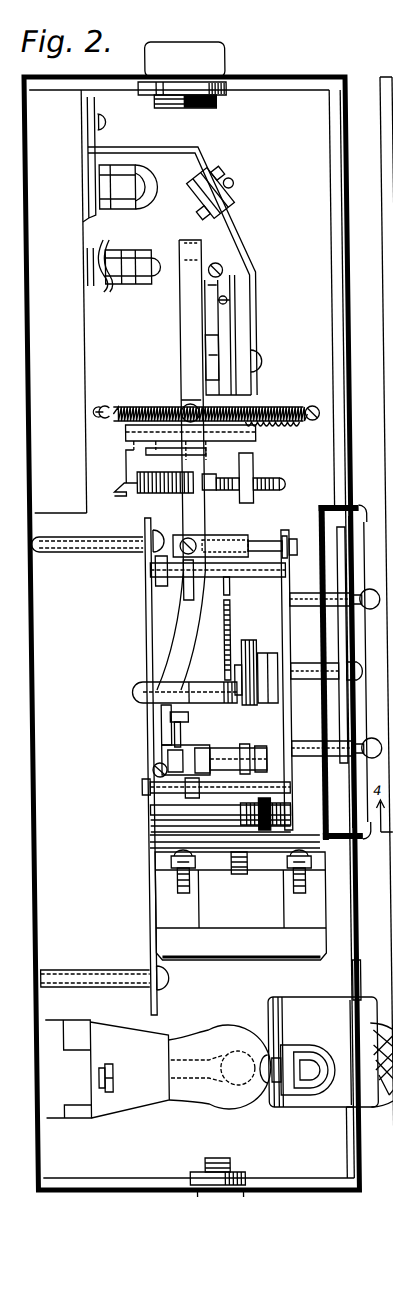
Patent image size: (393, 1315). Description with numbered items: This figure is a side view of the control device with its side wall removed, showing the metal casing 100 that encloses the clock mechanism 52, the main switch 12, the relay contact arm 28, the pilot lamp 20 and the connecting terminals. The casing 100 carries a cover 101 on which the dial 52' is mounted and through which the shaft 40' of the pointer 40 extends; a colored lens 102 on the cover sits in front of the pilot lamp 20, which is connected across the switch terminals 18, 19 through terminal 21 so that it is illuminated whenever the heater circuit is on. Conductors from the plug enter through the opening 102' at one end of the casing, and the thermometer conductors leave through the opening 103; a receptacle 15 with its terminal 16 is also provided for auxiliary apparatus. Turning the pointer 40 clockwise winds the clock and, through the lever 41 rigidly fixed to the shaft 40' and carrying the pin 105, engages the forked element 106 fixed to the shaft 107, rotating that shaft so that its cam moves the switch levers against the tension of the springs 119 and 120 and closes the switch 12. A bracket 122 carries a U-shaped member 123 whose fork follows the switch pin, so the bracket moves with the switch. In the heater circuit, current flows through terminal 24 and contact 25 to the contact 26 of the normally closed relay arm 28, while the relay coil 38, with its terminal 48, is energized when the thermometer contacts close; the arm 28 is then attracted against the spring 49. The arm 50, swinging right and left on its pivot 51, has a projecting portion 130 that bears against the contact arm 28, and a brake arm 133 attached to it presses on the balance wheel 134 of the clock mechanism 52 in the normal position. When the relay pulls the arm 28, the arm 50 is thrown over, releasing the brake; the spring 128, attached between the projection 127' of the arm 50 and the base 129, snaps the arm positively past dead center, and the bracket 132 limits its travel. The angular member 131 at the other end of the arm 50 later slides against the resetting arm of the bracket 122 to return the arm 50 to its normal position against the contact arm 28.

The main switch 12 is at (238, 897).
The receptacle 15 is at (292, 1012).
The terminal 16 is at (290, 1096).
The terminal 18 is at (188, 885).
The terminal 19 is at (282, 878).
The pilot light 20 is at (203, 1042).
The terminal 21 is at (104, 1077).
The terminal 24 is at (90, 123).
The contact 25 is at (232, 191).
The contact 26 is at (190, 185).
The contact arm 28 is at (238, 297).
The relay coil 38 is at (213, 327).
The pointer 40 is at (251, 578).
The shaft 40' is at (245, 652).
The lever 41 is at (168, 660).
The terminal 48 is at (112, 288).
The spring 49 is at (160, 492).
The arm 50 is at (178, 320).
The pivot 51 is at (182, 404).
The clock mechanism 52 is at (220, 766).
The dial 52' is at (335, 652).
The casing 100 is at (268, 77).
The cover 101 is at (343, 190).
The colored lens 102 is at (358, 1062).
The opening 102' is at (234, 1165).
The opening 103 is at (216, 48).
The pin 105 is at (155, 722).
The forked element 106 is at (160, 738).
The shaft 107 is at (228, 756).
The spring 119 is at (258, 824).
The spring 120 is at (220, 819).
The bracket 122 is at (200, 757).
The U-shaped member 123 is at (180, 797).
The projection 127' is at (208, 399).
The spring 128 is at (125, 420).
The base 129 is at (58, 507).
The projecting portion 130 is at (218, 266).
The angular member 131 is at (158, 770).
The bracket 132 is at (160, 712).
The brake arm 133 is at (210, 535).
The balance wheel 134 is at (243, 506).